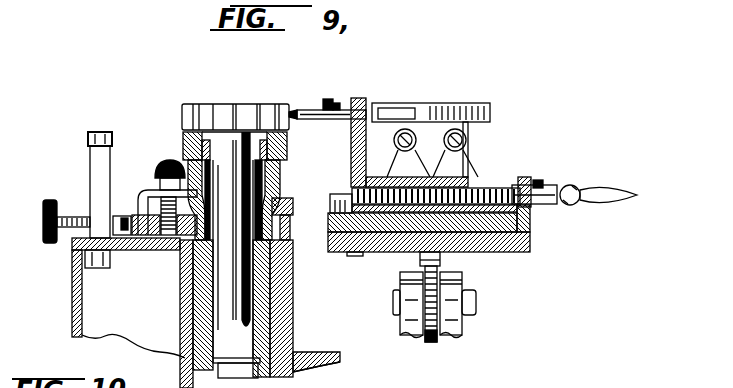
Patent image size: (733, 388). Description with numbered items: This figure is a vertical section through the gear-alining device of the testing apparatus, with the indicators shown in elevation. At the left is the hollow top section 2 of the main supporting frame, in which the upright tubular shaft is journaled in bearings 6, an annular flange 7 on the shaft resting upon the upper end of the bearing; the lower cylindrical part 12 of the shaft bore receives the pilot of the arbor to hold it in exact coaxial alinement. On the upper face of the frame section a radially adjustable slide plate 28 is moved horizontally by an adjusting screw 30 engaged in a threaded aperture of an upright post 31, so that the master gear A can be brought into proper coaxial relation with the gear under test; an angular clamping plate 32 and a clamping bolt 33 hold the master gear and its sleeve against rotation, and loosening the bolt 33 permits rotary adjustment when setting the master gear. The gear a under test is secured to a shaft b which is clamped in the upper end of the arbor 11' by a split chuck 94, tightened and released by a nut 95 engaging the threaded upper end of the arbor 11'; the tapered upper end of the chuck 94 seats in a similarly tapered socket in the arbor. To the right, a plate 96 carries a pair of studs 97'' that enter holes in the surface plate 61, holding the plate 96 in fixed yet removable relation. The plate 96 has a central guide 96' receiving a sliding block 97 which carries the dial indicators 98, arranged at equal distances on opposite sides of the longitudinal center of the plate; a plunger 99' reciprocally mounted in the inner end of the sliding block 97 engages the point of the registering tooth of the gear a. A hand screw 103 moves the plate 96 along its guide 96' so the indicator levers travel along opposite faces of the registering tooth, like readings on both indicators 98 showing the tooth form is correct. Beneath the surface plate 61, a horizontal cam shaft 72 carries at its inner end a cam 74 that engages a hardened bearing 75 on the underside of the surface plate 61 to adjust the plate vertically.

The hollow top section 2 is at (73, 305).
The bearings 6 is at (182, 283).
The annular enlargement or flange 7 is at (180, 250).
The radially adjustable slide plate 28 is at (132, 255).
The adjusting screw 30 is at (48, 205).
The upright post 31 is at (92, 168).
The angular clamping plate 32 is at (147, 190).
The clamping bolt 33 is at (168, 162).
The gear under test a is at (226, 108).
The nut 95 is at (285, 145).
The split chuck 94 is at (277, 172).
The master gear A is at (278, 202).
The arbor 11' is at (260, 309).
The shaft b is at (243, 297).
The cylindrical part of the bore 12 is at (264, 345).
The plunger 99' is at (327, 103).
The sliding block 97 is at (424, 142).
The indicators 98 is at (406, 104).
The central guide 96' is at (337, 193).
The hand screw 103 is at (508, 185).
The plate 96 is at (429, 241).
The surface plate 61 is at (531, 241).
The studs 97'' is at (357, 266).
The hardened bearing 75 is at (420, 264).
The cam 74 is at (432, 343).
The horizontal cam shaft 72 is at (476, 301).